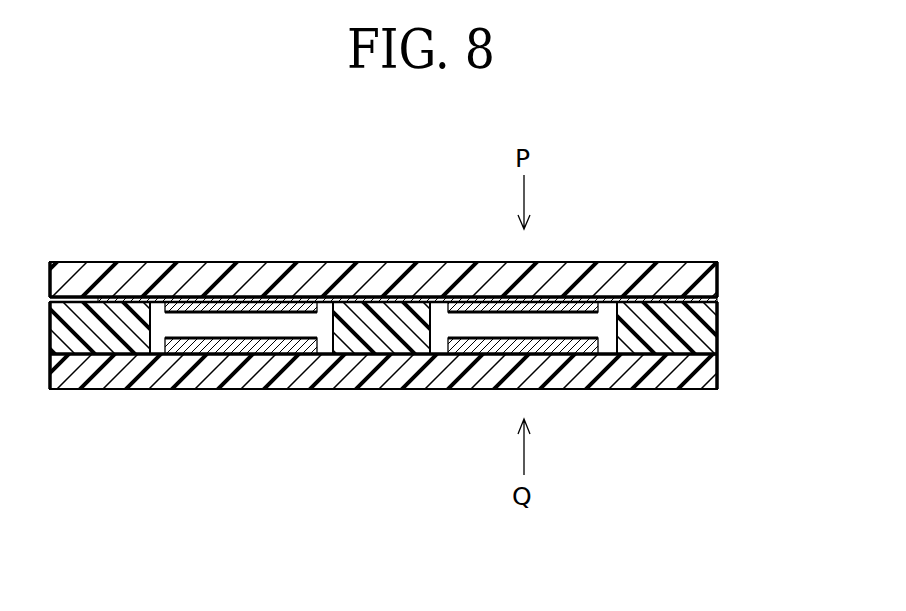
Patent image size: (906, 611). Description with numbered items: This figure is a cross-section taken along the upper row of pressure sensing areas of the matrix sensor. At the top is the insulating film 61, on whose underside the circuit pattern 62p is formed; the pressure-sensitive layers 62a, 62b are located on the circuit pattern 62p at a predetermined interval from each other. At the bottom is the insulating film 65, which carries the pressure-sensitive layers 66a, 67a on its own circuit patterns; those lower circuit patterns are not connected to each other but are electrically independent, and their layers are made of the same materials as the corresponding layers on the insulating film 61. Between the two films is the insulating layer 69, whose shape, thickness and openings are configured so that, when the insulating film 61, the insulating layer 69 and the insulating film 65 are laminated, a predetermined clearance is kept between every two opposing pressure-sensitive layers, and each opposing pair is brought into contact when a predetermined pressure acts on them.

The insulating film 61 is at (697, 273).
The pressure-sensitive layer 62a is at (240, 298).
The pressure-sensitive layer 62b is at (463, 298).
The circuit pattern 62p is at (633, 300).
The insulating film 65 is at (698, 368).
The pressure-sensitive layer 66a is at (234, 346).
The pressure-sensitive layer 67a is at (478, 346).
The insulating layer 69 is at (695, 328).